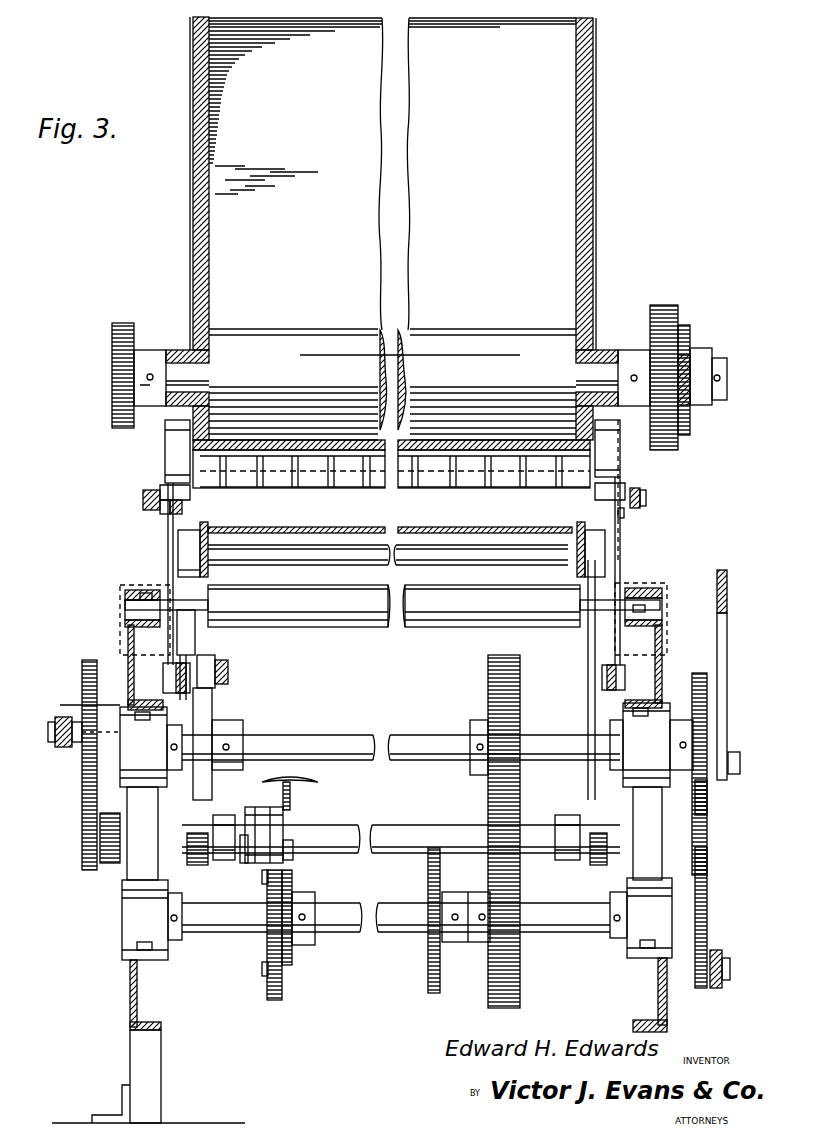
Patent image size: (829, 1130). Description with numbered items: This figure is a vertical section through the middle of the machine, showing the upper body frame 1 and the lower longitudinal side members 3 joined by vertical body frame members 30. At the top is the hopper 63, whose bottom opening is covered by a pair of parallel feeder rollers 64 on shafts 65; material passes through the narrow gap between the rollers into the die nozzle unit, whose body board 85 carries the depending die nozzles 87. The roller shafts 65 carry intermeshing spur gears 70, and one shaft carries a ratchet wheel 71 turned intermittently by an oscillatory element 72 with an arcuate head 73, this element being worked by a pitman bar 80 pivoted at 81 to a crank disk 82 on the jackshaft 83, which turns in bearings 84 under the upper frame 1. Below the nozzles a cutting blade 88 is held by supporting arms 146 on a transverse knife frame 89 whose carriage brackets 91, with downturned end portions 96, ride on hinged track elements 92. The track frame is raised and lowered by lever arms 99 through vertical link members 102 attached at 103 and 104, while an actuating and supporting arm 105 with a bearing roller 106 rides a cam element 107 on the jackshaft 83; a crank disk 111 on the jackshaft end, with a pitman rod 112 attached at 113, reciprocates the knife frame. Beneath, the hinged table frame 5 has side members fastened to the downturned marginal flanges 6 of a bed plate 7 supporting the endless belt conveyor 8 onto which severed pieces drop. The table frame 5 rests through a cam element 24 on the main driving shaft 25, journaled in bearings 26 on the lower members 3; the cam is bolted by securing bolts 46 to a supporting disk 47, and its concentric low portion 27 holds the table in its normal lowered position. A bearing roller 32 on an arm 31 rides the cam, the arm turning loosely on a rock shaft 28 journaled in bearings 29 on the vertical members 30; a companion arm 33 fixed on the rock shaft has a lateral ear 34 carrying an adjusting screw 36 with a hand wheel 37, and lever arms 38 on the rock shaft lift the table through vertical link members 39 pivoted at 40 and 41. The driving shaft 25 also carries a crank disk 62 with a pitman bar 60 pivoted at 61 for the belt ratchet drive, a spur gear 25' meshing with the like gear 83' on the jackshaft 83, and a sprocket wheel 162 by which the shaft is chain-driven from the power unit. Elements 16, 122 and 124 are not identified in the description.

The upper body frame 1 is at (120, 640).
The lower longitudinal side members 3 is at (130, 990).
The table frame 5 is at (200, 540).
The downturned marginal flanges 6 is at (215, 540).
The bed plate 7 is at (334, 535).
The endless belt conveyor 8 is at (512, 527).
The lower roller 16 is at (432, 600).
The cam element 24 is at (285, 972).
The main driving shaft 25 is at (396, 931).
The spur gear 25' is at (540, 984).
The bearings 26 is at (140, 932).
The concentric low peripheral portion 27 is at (240, 925).
The rock shaft 28 is at (388, 832).
The bearings 29 is at (110, 838).
The vertical body frame members 30 is at (135, 820).
The arm 31 is at (293, 858).
The bearing roller 32 is at (262, 855).
The companion arm 33 is at (290, 815).
The lateral ear 34 is at (283, 805).
The adjusting screw 36 is at (318, 782).
The hand wheel 37 is at (312, 776).
The lever arms 38 is at (220, 860).
The vertical link members 39 is at (196, 640).
The pivot 40 is at (192, 838).
The pivot 41 is at (178, 558).
The securing bolts 46 is at (262, 878).
The supporting disk 47 is at (305, 892).
The pitman bar 60 is at (718, 952).
The pivot 61 is at (730, 972).
The crank disk 62 is at (707, 895).
The hopper 63 is at (558, 187).
The feeder rollers 64 is at (370, 330).
The roller shafts 65 is at (175, 370).
The spur gears 70 is at (122, 323).
The ratchet wheel 71 is at (660, 305).
The oscillatory element 72 is at (696, 365).
The arcuate head 73 is at (686, 330).
The pitman bar 80 is at (727, 604).
The pivot 81 is at (740, 768).
The crank disk 82 is at (700, 715).
The jackshaft 83 is at (493, 735).
The spur gear 83' is at (482, 831).
The supporting bearings 84 is at (130, 780).
The body board 85 is at (315, 460).
The die nozzles 87 is at (275, 478).
The cutting blade 88 is at (452, 475).
The knife frame 89 is at (205, 484).
The carriage brackets 91 is at (160, 490).
The track elements 92 is at (172, 445).
The downturned end portions 96 is at (160, 507).
The lever arms 99 is at (165, 683).
The vertical link members 102 is at (168, 578).
The hinge 103 is at (170, 670).
The pivot 104 is at (182, 507).
The actuating and supporting arm 105 is at (228, 672).
The bearing roller 106 is at (212, 690).
The cam element 107 is at (243, 732).
The crank disk 111 is at (120, 668).
The pitman rod 112 is at (58, 745).
The pivot 113 is at (60, 722).
The nut 122 is at (143, 497).
The washer 124 is at (646, 500).
The supporting arms 146 is at (372, 470).
The sprocket wheel 162 is at (428, 958).